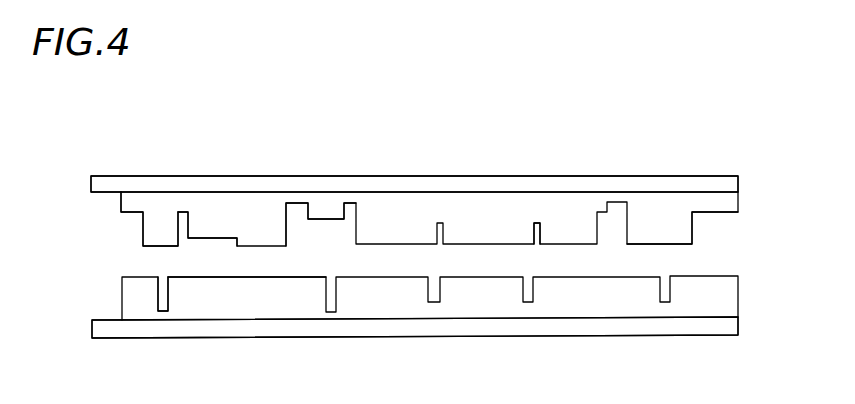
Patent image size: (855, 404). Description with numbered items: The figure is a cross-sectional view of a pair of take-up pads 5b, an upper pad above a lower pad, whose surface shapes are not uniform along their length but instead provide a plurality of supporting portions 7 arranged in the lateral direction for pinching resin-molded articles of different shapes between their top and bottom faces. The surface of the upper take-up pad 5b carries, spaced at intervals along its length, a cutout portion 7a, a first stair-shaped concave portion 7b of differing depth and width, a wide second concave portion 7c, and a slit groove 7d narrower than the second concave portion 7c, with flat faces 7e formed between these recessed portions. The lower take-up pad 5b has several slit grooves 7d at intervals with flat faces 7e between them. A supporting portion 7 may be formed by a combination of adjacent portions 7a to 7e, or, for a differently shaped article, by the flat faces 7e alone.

The take-up pad 5b is at (405, 213).
The supporting portion 7 is at (570, 244).
The cutout portion 7a is at (141, 232).
The first stair-shaped concave portion 7b is at (207, 240).
The second concave portion 7c is at (288, 204).
The slit groove 7d is at (535, 222).
The flat face 7e is at (680, 246).